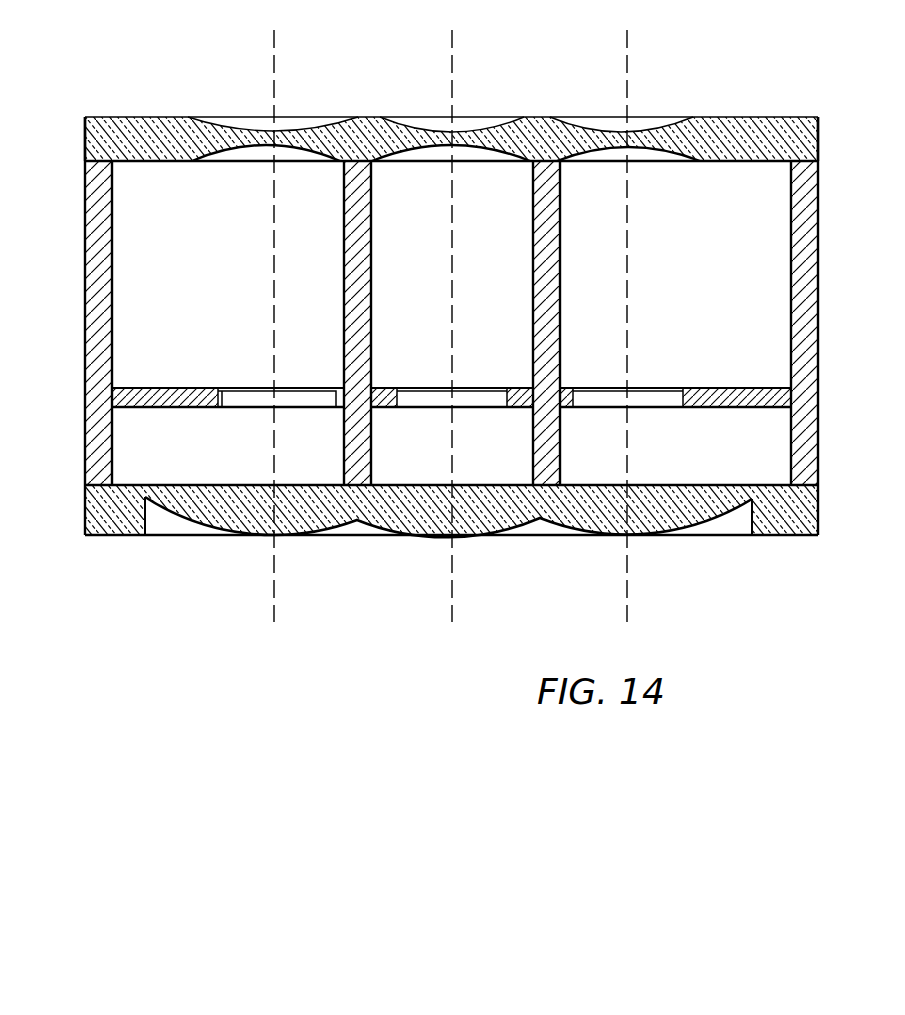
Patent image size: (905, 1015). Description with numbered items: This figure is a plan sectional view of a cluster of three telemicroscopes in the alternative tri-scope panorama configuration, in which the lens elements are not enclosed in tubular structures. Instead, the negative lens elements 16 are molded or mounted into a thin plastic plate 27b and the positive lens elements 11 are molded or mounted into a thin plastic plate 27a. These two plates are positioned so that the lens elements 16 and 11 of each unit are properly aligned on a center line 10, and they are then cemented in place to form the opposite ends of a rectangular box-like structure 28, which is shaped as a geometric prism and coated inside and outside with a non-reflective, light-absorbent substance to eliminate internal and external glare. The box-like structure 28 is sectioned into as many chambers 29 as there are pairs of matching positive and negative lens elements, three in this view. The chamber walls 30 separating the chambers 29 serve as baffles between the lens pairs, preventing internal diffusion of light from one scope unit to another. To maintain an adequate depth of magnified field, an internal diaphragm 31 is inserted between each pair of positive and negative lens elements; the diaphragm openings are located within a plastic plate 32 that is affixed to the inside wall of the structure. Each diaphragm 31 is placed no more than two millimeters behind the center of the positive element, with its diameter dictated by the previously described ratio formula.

The center line 10 is at (276, 62).
The positive lens elements 11 is at (358, 518).
The negative lens elements 16 is at (393, 117).
The plastic plate 27a is at (128, 535).
The plastic plate 27b is at (140, 117).
The box-like structure 28 is at (85, 208).
The chambers 29 is at (204, 232).
The chamber walls 30 is at (533, 337).
The internal diaphragm 31 is at (412, 402).
The plastic plate 32 is at (190, 407).